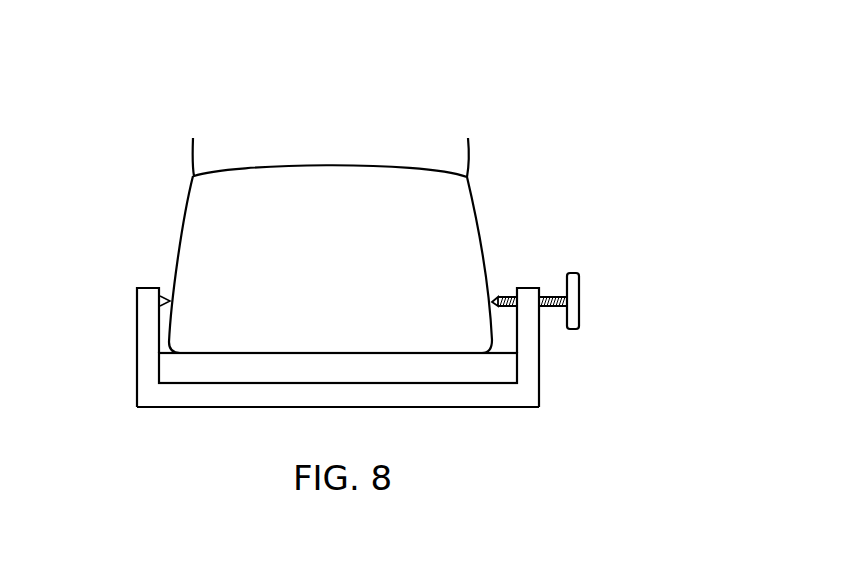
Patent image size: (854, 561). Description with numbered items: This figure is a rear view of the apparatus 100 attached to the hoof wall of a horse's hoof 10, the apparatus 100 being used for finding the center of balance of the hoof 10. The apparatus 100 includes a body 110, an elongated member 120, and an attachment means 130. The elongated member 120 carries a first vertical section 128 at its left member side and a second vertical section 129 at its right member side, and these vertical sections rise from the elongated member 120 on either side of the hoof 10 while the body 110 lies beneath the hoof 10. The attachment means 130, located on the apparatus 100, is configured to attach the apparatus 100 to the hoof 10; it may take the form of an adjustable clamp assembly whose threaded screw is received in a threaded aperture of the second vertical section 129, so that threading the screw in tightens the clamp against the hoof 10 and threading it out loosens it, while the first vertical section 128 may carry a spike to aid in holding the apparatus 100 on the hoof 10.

The apparatus 100 is at (517, 100).
The hoof 10 is at (230, 238).
The body 110 is at (223, 385).
The elongated member 120 is at (493, 410).
The first vertical section 128 is at (143, 345).
The second vertical section 129 is at (538, 372).
The attachment means 130 is at (585, 303).